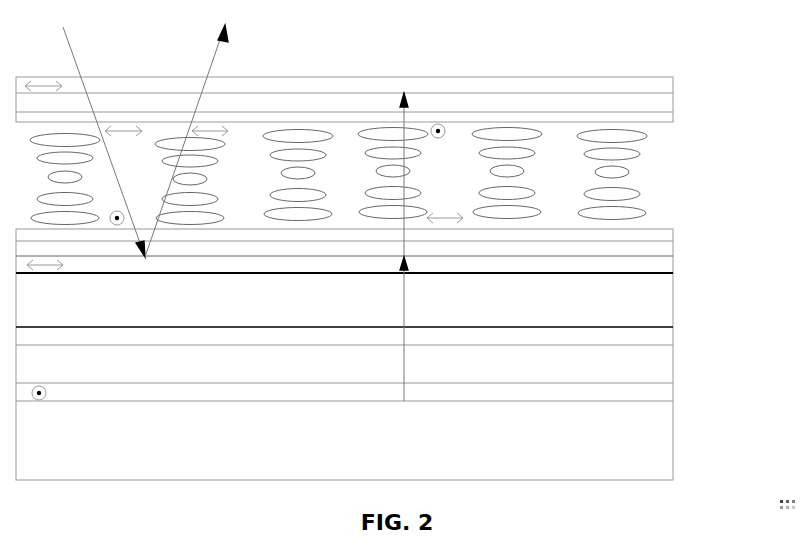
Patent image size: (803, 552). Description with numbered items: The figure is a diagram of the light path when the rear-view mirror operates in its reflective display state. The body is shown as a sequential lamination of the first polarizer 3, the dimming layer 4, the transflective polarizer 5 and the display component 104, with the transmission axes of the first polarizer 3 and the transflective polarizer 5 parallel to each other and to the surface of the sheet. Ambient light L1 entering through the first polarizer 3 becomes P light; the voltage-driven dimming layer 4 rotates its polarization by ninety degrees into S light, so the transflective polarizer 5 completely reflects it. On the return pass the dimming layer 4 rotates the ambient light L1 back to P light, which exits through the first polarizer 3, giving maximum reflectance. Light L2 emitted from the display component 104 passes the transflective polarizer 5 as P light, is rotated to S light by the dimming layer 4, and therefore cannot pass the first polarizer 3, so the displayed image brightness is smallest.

The first polarizer 3 is at (672, 91).
The dimming layer 4 is at (678, 97).
The transflective polarizer 5 is at (672, 264).
The display component 104 is at (678, 273).
The ambient light L1 is at (68, 43).
The light emitted from the display component L2 is at (407, 102).